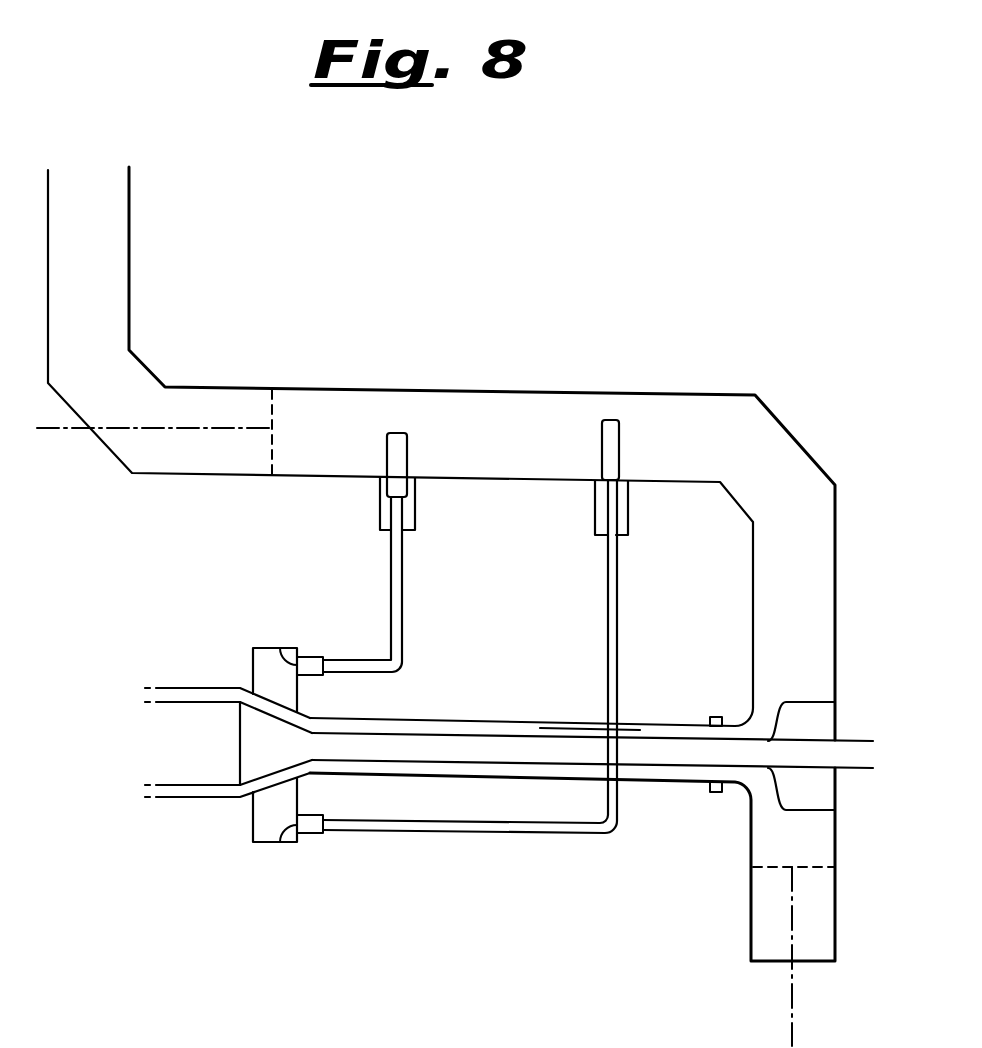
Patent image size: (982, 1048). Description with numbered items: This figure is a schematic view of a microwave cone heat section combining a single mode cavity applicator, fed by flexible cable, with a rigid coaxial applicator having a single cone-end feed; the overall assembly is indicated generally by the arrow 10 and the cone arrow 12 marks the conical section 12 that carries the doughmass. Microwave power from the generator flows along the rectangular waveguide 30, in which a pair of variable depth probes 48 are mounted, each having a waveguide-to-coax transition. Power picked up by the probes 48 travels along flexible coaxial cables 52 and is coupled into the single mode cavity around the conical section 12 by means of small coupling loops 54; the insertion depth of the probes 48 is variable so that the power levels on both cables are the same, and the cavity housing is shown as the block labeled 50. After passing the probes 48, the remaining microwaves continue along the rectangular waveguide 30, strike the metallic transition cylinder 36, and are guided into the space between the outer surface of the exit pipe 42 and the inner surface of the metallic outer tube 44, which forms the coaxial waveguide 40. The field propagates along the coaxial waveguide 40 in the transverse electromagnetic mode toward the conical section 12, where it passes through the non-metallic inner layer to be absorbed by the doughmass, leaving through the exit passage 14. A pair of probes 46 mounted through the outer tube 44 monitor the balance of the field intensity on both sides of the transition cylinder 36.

The nozzle assembly 10 is at (204, 790).
The conical section 12 is at (268, 798).
The sample stream 14 is at (517, 752).
The rectangular waveguide 30 is at (347, 374).
The transition cylinder 36 is at (817, 700).
The coaxial waveguide 40 is at (628, 735).
The exit pipe 42 is at (588, 732).
The outer tube 44 is at (680, 723).
The probes 46 is at (720, 794).
The variable depth probes 48 is at (610, 420).
The upper block 50 is at (262, 663).
The flexible coaxial cables 52 is at (608, 612).
The coupling loops 54 is at (278, 845).